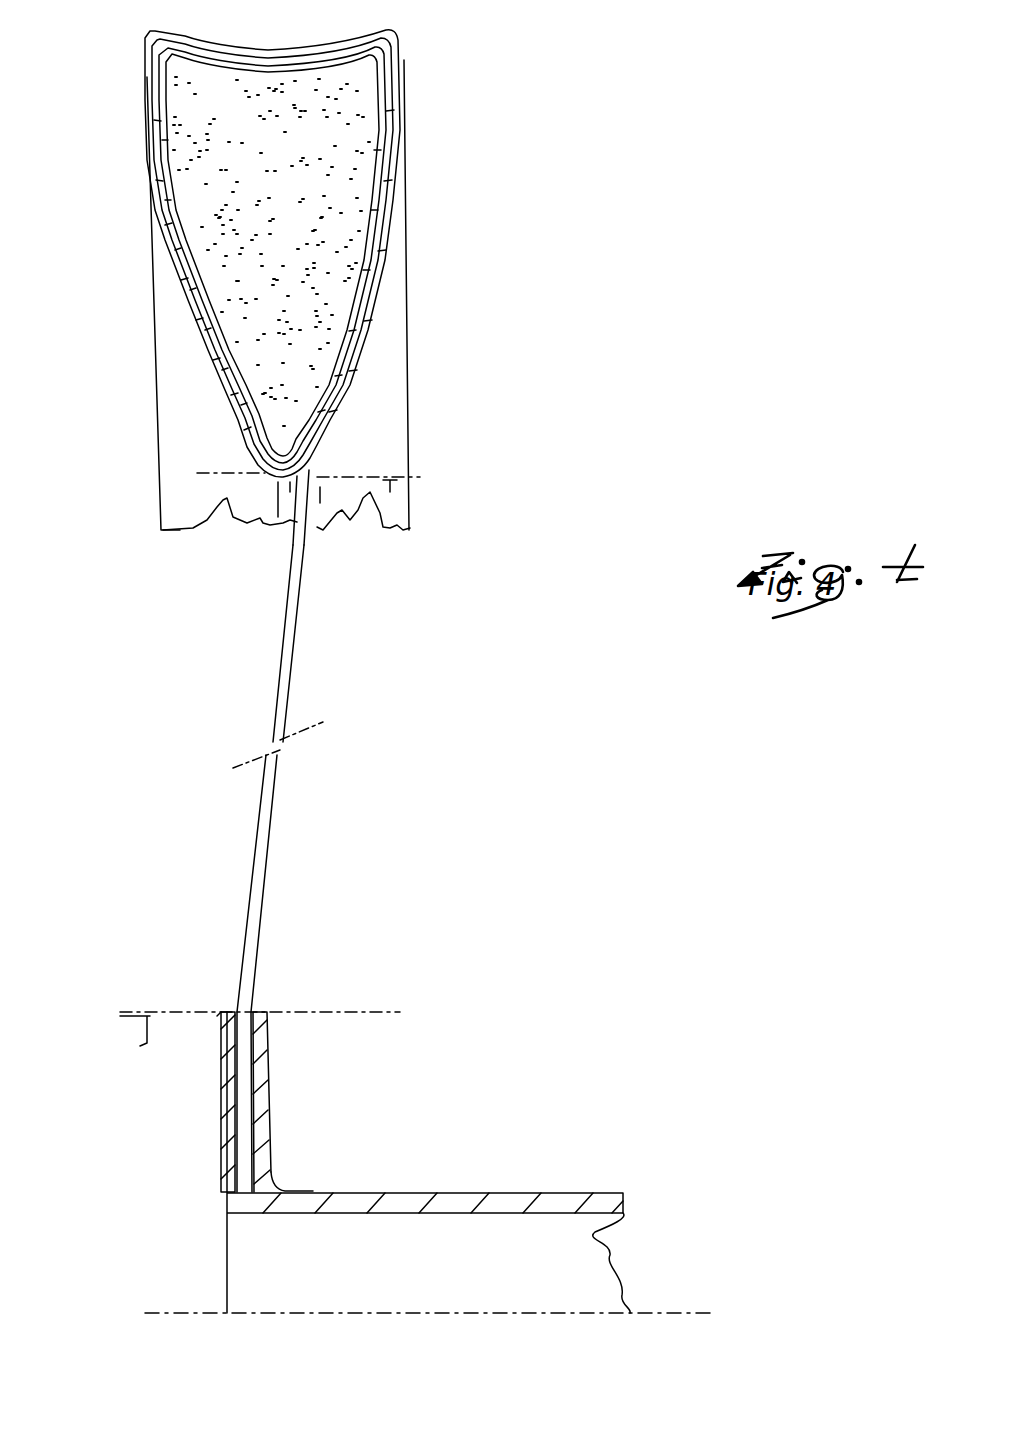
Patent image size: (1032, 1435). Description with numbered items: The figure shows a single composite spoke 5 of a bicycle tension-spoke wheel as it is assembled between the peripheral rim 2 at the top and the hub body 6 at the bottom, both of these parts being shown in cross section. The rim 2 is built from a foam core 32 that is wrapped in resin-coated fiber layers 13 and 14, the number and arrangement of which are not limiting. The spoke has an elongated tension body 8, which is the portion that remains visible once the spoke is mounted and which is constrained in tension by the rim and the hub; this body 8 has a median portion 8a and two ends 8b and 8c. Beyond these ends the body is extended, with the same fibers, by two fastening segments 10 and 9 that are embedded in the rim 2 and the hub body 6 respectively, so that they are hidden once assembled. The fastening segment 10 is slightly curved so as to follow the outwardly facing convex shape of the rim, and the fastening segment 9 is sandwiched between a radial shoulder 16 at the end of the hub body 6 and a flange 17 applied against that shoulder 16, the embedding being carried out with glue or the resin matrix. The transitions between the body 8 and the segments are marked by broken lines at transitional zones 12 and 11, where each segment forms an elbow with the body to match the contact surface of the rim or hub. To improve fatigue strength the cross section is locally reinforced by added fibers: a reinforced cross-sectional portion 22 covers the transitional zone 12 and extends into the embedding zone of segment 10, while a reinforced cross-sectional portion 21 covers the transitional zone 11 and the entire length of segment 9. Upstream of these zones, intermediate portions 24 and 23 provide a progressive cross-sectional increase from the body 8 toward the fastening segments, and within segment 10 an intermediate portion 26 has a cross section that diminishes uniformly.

The peripheral rim 2 is at (359, 238).
The foam core 32 is at (313, 128).
The resin-coated fiber layer 13 is at (367, 247).
The resin-coated fiber layer 14 is at (380, 270).
The fastening segment 10 is at (357, 373).
The reinforced cross-sectional portion 22 is at (330, 466).
The transitional zone 12 is at (383, 506).
The elongated tension body 8 is at (341, 831).
The median portion 8a is at (287, 703).
The end of the body 8b is at (330, 527).
The end of the body 8c is at (245, 1002).
The intermediate portion 26 is at (293, 433).
The intermediate portion 24 is at (297, 488).
The spoke 5 is at (141, 686).
The intermediate portion 23 is at (243, 1000).
The transitional zone 11 is at (140, 1060).
The reinforced cross-sectional portion 21 is at (193, 1025).
The radial shoulder 16 is at (221, 1126).
The flange 17 is at (260, 1120).
The fastening segment 9 is at (253, 1117).
The hub body 6 is at (236, 1207).